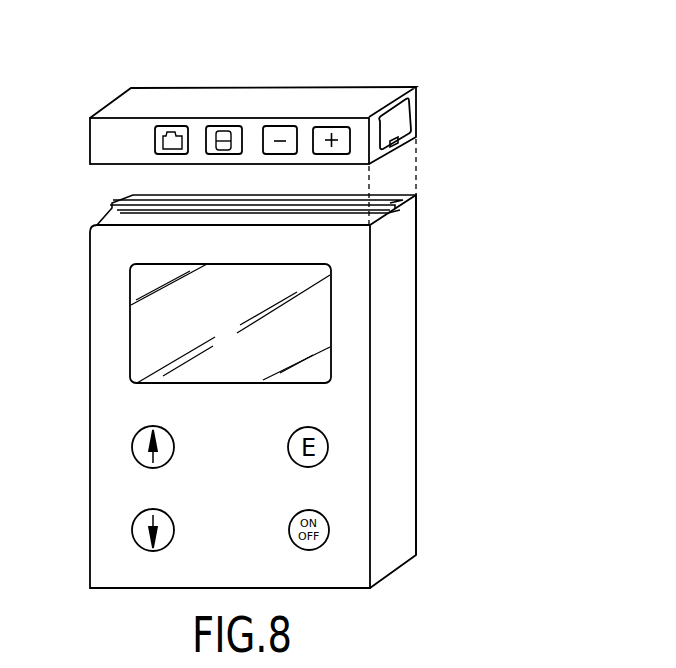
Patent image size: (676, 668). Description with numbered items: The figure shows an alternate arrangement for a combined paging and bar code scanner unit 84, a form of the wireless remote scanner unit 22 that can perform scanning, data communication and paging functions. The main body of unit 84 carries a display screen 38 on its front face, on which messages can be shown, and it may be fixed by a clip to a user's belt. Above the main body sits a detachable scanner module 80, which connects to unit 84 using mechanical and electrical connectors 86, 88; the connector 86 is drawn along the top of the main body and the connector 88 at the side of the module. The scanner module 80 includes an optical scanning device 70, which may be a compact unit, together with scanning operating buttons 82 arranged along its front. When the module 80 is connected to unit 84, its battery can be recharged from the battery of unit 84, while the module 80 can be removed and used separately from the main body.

The wireless remote scanner unit 22 is at (528, 370).
The display screen 38 is at (143, 321).
The optical scanning device 70 is at (409, 103).
The detachable scanner module 80 is at (183, 87).
The scanning operating buttons 82 is at (279, 125).
The combined paging and bar code scanner unit 84 is at (405, 282).
The mechanical connector 86 is at (113, 203).
The electrical connector 88 is at (394, 143).